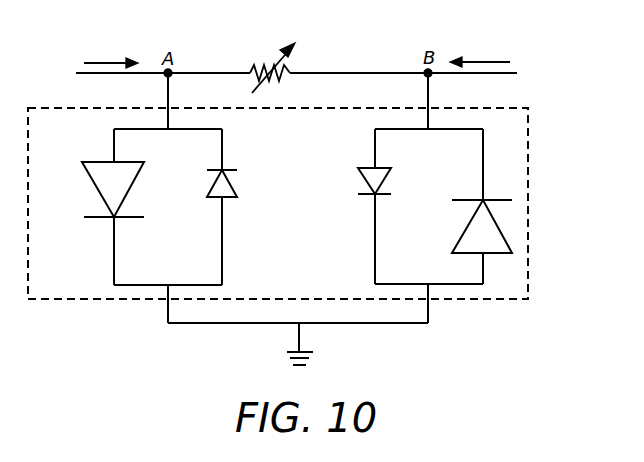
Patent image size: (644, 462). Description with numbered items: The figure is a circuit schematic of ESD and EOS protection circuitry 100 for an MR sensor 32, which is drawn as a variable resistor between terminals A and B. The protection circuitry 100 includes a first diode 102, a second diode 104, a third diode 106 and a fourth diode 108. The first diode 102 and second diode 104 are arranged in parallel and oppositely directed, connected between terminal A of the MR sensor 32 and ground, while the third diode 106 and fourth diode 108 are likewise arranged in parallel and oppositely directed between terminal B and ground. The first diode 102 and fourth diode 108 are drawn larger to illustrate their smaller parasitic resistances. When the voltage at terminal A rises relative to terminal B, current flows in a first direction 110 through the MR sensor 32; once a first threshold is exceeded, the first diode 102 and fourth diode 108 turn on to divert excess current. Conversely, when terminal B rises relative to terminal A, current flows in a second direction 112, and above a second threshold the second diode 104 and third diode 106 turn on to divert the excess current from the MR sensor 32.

The MR sensor 32 is at (286, 67).
The ESD and EOS protection circuitry 100 is at (533, 160).
The first diode 102 is at (130, 188).
The second diode 104 is at (230, 197).
The third diode 106 is at (383, 185).
The fourth diode 108 is at (466, 230).
The first direction 110 is at (109, 49).
The second direction 112 is at (486, 50).